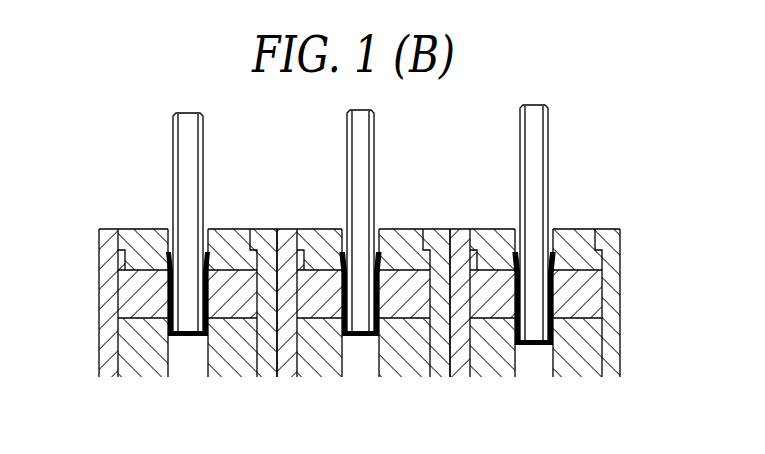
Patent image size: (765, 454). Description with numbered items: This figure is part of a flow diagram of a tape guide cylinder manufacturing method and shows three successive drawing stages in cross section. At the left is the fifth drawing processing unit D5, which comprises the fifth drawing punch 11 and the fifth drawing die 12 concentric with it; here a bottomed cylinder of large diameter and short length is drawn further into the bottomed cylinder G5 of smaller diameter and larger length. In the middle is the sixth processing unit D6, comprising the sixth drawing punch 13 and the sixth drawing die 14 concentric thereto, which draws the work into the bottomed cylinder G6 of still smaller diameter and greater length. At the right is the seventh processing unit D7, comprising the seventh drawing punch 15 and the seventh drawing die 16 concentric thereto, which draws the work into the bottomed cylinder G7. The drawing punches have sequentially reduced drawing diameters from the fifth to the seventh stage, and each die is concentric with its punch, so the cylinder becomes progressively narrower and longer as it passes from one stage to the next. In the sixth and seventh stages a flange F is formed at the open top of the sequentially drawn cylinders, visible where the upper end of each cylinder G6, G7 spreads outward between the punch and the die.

The fifth drawing punch 11 is at (178, 172).
The sixth drawing punch 13 is at (360, 160).
The seventh drawing punch 15 is at (544, 163).
The fifth drawing die 12 is at (130, 300).
The sixth drawing die 14 is at (320, 320).
The seventh drawing die 16 is at (585, 295).
The fifth drawing processing unit D5 is at (228, 229).
The sixth processing unit D6 is at (413, 229).
The seventh processing unit D7 is at (504, 229).
The bottomed cylinder G5 is at (190, 338).
The bottomed cylinder G6 is at (370, 338).
The bottomed cylinder G7 is at (538, 347).
The flange F is at (380, 252).